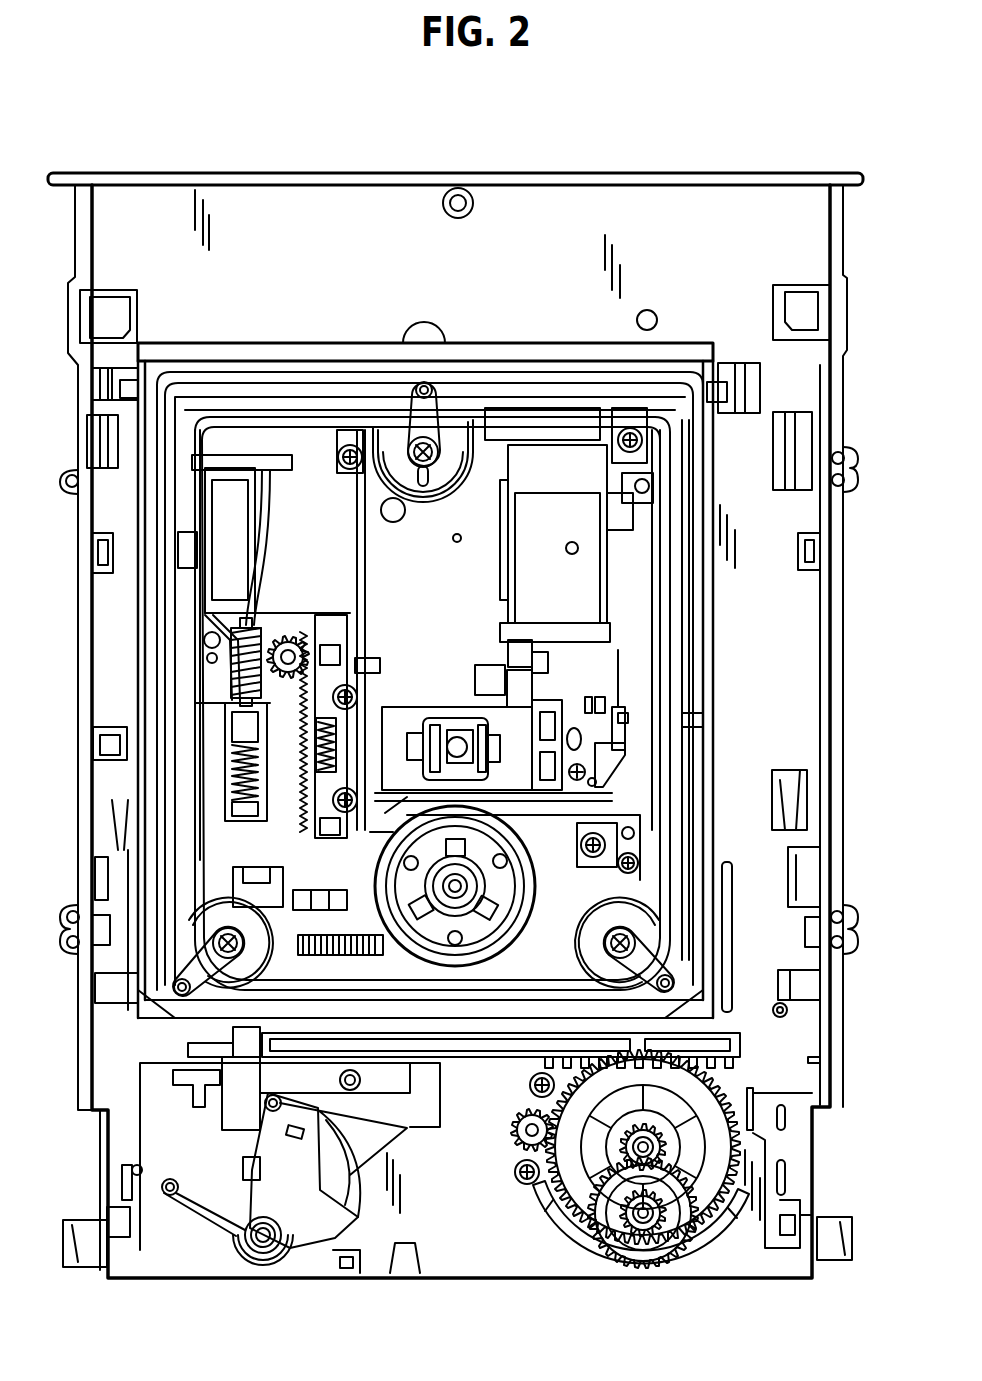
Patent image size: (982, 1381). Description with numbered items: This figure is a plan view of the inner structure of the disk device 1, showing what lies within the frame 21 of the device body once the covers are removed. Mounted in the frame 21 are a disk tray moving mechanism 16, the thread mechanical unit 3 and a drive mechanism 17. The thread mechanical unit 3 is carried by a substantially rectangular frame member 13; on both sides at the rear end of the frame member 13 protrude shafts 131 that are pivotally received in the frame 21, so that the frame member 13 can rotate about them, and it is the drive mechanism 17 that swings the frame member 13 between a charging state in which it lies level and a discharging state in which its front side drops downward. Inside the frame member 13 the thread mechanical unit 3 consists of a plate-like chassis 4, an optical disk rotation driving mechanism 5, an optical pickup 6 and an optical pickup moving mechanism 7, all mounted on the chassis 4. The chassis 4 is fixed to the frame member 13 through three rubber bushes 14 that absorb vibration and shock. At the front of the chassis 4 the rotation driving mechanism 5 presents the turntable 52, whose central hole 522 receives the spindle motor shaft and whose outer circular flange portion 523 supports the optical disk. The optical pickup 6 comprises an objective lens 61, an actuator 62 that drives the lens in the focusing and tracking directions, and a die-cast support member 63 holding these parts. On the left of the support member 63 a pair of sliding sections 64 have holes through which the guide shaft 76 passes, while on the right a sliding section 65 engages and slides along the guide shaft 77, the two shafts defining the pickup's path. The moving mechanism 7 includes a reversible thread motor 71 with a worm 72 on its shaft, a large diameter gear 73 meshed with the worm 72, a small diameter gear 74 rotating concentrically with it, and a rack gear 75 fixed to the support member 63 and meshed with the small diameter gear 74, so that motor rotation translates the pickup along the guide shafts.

The disk device 1 is at (590, 165).
The frame 21 is at (785, 218).
The thread mechanical unit 3 is at (322, 413).
The rubber bushes 14 is at (378, 430).
The chassis 4 is at (490, 467).
The shafts 131 is at (122, 390).
The thread motor 71 is at (240, 510).
The optical pickup moving mechanism 7 is at (207, 587).
The small diameter gear 74 is at (265, 640).
The large diameter gear 73 is at (262, 668).
The rack gear 75 is at (262, 692).
The worm 72 is at (248, 630).
The guide shaft 76 is at (367, 530).
The sliding sections 64 is at (373, 665).
The support member 63 is at (417, 718).
The optical pickup 6 is at (462, 735).
The objective lens 61 is at (460, 746).
The guide shaft 77 is at (623, 592).
The frame member 13 is at (690, 652).
The actuator 62 is at (622, 700).
The sliding section 65 is at (542, 740).
The optical disk rotation driving mechanism 5 is at (507, 813).
The turntable 52 is at (507, 888).
The flange portion 523 is at (443, 933).
The hole 522 is at (462, 890).
The drive mechanism 17 is at (745, 1062).
The disk tray moving mechanism 16 is at (572, 1228).